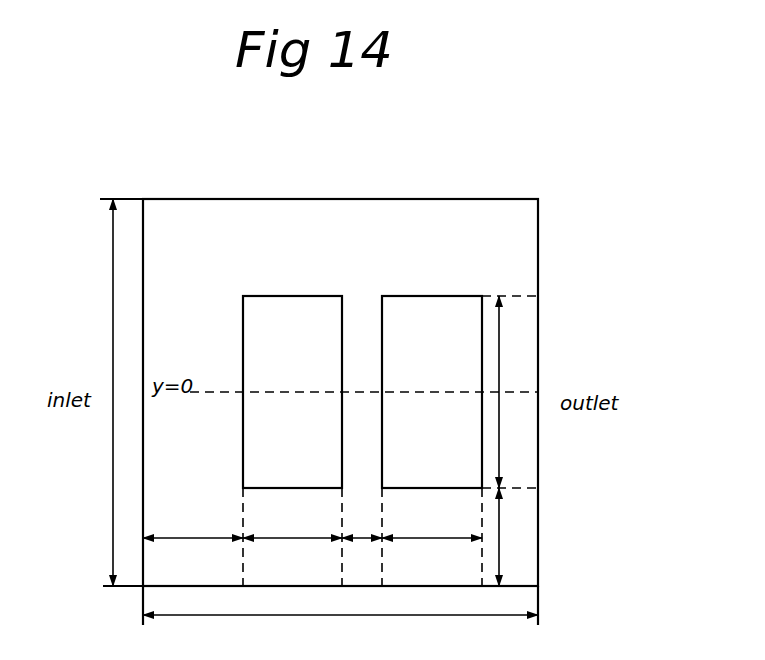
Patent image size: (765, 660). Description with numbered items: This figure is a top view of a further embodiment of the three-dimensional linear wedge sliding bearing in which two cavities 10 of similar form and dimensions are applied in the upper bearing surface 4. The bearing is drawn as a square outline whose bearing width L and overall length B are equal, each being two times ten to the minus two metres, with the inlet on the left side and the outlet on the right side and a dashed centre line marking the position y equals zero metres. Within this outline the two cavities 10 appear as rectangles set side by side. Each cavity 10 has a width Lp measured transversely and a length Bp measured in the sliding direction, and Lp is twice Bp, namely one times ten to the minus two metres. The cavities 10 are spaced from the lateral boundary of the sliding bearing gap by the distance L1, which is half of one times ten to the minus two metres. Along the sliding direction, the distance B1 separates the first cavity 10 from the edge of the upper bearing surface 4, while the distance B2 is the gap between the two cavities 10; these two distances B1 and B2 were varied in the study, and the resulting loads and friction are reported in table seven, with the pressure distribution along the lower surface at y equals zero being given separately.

The upper bearing surface 4 is at (514, 241).
The cavity 10 is at (303, 318).
The bearing width L is at (104, 392).
The bearing length B is at (340, 603).
The distance B1 is at (193, 526).
The distance B2 is at (362, 526).
The cavity length Bp is at (362, 526).
The cavity width Lp is at (514, 392).
The cavity distance from lateral boundary L1 is at (515, 537).